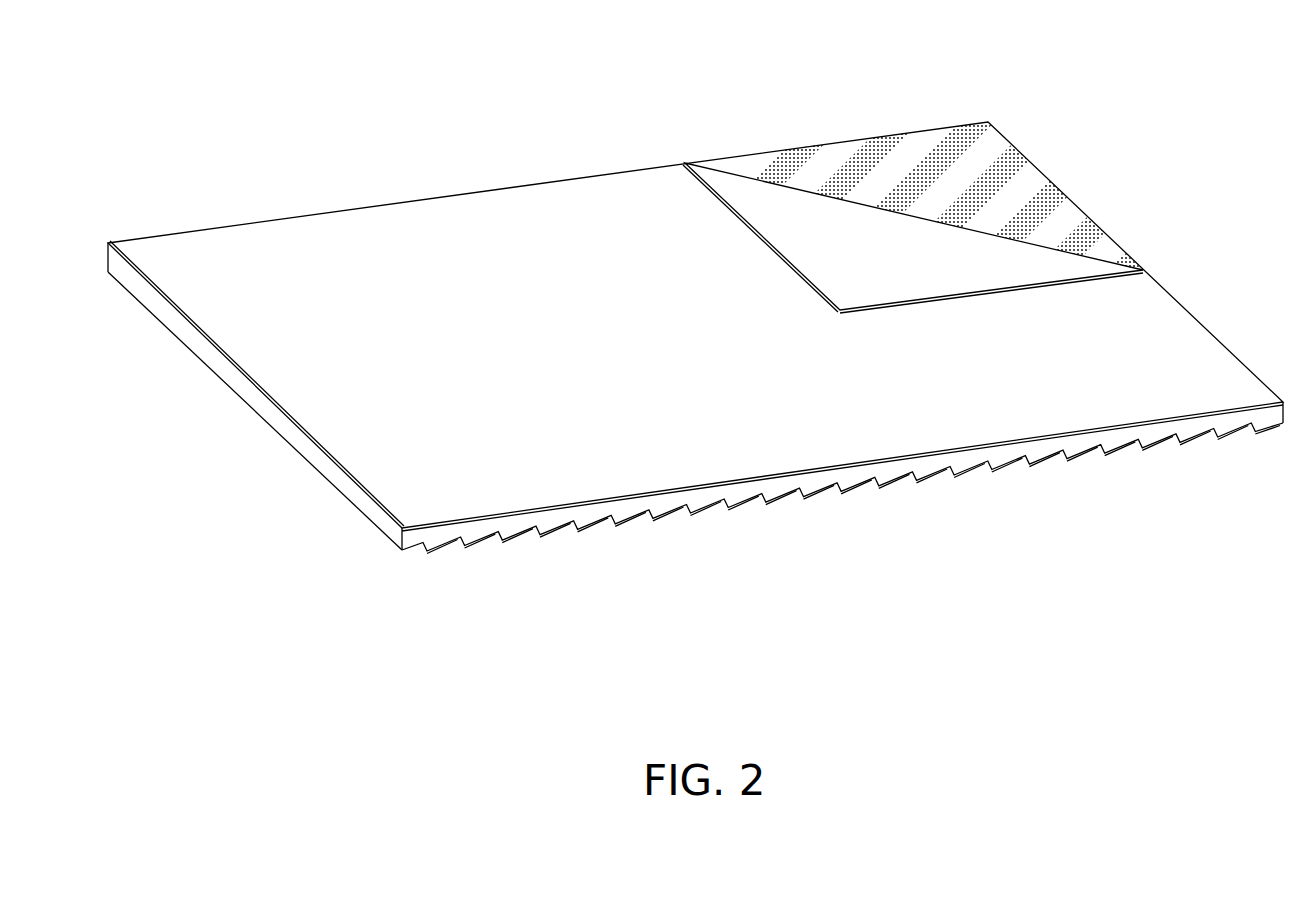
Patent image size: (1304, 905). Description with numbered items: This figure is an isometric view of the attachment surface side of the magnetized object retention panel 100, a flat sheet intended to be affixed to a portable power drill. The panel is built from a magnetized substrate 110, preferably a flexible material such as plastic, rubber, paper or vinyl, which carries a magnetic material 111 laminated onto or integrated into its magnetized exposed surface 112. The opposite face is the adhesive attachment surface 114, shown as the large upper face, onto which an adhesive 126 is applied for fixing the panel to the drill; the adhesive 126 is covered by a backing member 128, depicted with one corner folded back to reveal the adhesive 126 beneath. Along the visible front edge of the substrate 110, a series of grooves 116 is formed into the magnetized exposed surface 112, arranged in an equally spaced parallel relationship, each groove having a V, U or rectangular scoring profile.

The magnetized object retention panel 100 is at (700, 337).
The magnetized substrate 110 is at (858, 469).
The magnetic material 111 is at (847, 499).
The magnetized exposed surface 112 is at (716, 530).
The adhesive attachment surface 114 is at (533, 236).
The series of grooves 116 is at (1067, 456).
The adhesive 126 is at (967, 163).
The backing member 128 is at (853, 243).